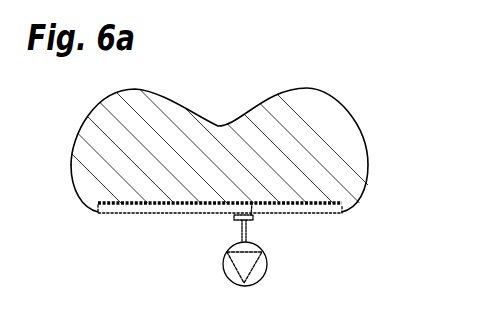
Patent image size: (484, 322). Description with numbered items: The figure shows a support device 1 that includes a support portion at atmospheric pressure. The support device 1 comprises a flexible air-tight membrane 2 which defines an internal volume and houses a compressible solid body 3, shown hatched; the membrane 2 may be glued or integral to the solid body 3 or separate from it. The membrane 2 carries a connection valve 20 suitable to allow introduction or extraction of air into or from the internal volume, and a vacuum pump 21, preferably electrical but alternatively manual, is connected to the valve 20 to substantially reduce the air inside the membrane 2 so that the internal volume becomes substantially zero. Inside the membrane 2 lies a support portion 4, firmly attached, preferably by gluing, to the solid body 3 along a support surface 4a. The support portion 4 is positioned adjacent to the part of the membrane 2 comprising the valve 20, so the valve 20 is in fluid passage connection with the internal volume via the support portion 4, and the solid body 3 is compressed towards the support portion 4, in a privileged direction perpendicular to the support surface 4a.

The support device 1 is at (421, 146).
The flexible air-tight membrane 2 is at (343, 210).
The compressible solid body 3 is at (242, 161).
The support portion 4 is at (147, 211).
The support surface 4a is at (252, 203).
The connection valve 20 is at (253, 217).
The vacuum pump 21 is at (222, 253).